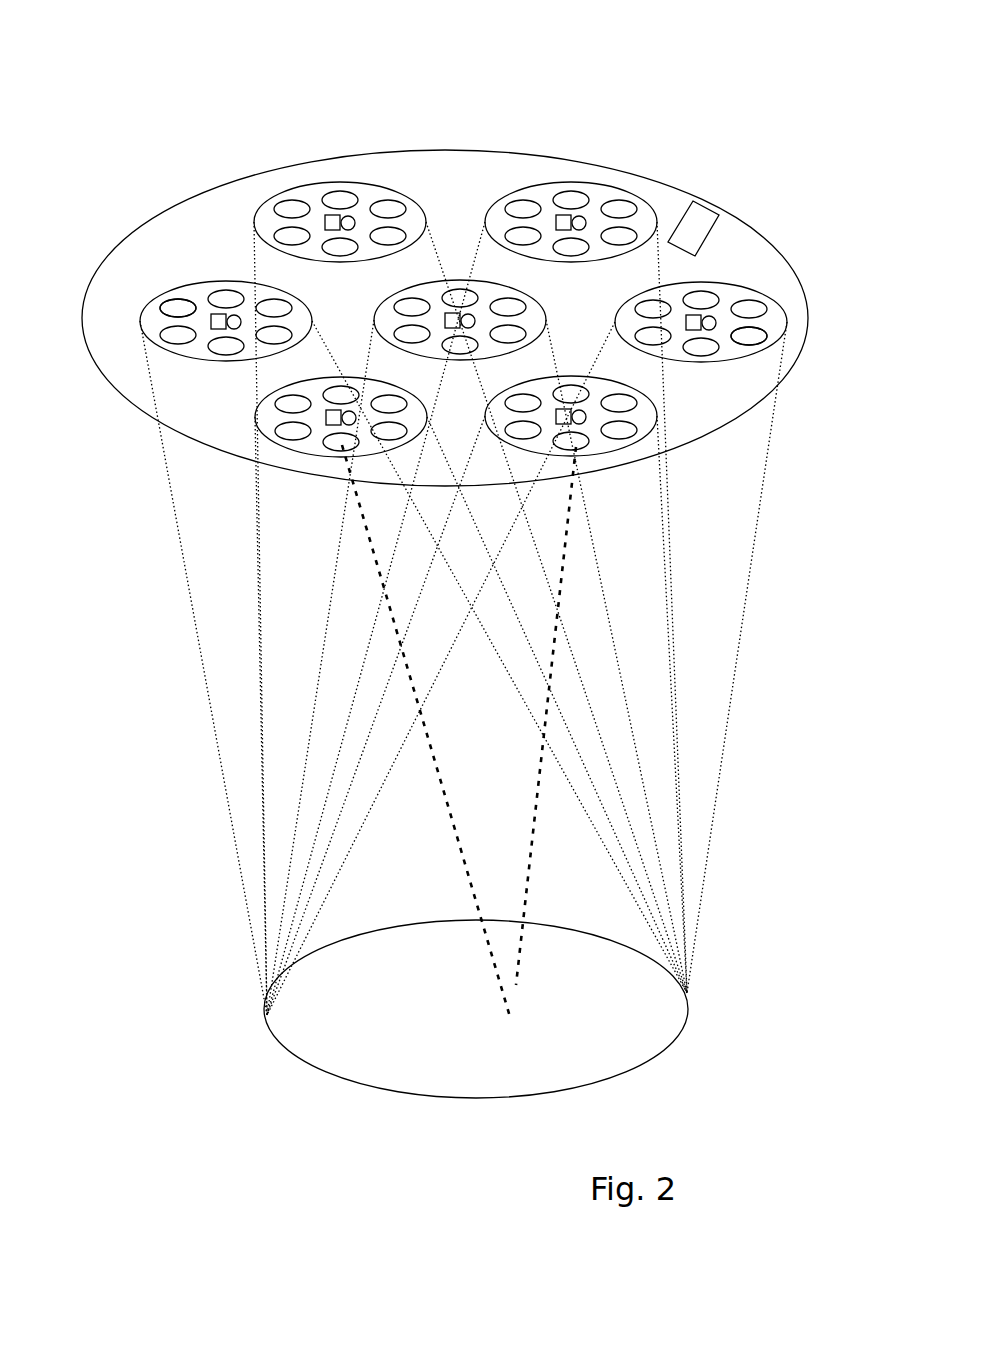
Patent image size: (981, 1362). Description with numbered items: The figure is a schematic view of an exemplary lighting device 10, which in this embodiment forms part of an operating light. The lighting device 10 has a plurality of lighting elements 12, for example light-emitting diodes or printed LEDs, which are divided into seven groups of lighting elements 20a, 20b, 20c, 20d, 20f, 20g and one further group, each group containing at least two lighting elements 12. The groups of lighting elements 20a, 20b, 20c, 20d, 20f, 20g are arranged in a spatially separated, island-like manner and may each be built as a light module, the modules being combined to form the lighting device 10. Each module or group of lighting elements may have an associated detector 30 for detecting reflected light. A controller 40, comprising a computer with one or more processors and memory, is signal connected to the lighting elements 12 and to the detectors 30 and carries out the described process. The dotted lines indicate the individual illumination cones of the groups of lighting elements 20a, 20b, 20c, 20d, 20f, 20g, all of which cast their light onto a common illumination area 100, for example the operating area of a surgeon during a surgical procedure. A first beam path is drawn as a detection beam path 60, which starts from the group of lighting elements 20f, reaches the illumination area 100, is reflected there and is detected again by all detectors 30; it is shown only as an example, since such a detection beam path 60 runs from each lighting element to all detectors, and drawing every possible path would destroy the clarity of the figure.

The lighting device 10 is at (139, 66).
The lighting element 12 is at (178, 308).
The group of lighting elements 20a is at (140, 320).
The group of lighting elements 20b is at (302, 185).
The group of lighting elements 20c is at (537, 184).
The group of lighting elements 20d is at (726, 283).
The group of lighting elements 20f is at (640, 440).
The group of lighting elements 20g is at (322, 456).
The detector 30 is at (182, 356).
The controller 40 is at (693, 203).
The detection beam path 60 is at (516, 985).
The illumination area 100 is at (347, 1053).